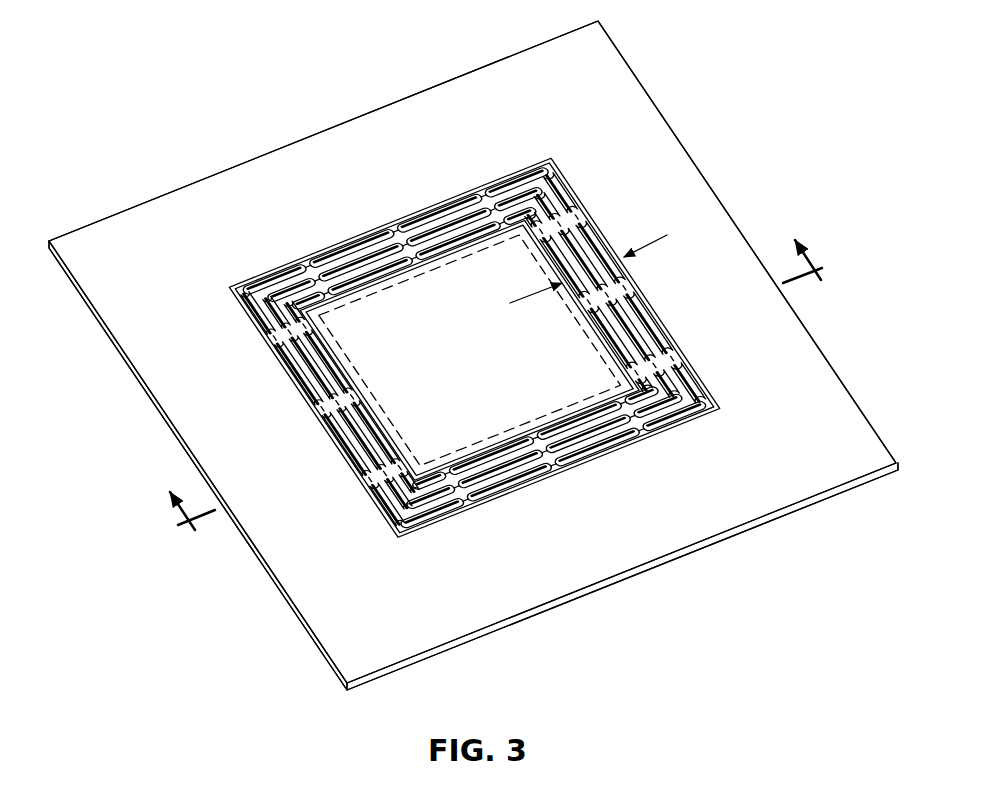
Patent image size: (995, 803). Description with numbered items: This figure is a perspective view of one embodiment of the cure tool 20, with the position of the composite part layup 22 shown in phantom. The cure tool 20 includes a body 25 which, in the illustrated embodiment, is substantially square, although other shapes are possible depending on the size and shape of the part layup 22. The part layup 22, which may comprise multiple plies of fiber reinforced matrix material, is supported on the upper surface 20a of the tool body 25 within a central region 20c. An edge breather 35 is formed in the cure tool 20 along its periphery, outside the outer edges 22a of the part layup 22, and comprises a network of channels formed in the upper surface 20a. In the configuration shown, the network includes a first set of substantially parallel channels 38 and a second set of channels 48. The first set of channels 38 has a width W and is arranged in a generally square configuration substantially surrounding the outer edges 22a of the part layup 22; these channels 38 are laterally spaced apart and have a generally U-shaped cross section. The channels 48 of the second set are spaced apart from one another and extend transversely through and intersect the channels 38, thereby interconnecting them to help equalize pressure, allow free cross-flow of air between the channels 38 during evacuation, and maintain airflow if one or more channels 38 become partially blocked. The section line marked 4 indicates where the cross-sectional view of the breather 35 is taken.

The cure tool 20 is at (470, 355).
The upper surface 20a is at (199, 213).
The central region 20c is at (438, 316).
The composite part layup 22 is at (316, 311).
The outer edges 22a is at (349, 369).
The body 25 is at (826, 428).
The edge breather 35 is at (474, 354).
The first set of channels 38 is at (543, 238).
The second set of channels 48 is at (390, 240).
The section line 4- 4 is at (503, 397).